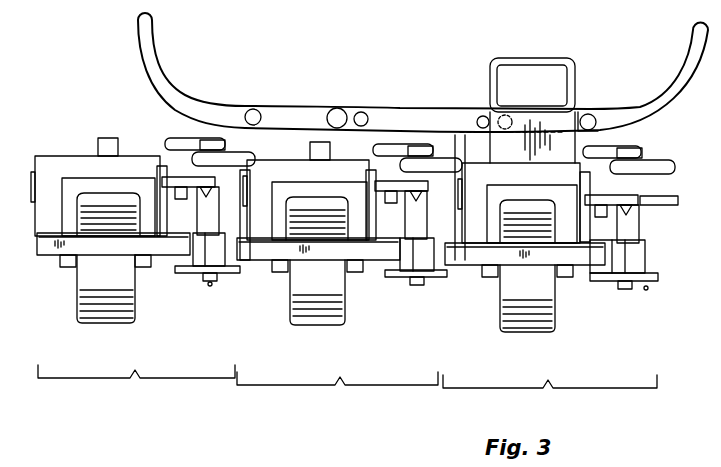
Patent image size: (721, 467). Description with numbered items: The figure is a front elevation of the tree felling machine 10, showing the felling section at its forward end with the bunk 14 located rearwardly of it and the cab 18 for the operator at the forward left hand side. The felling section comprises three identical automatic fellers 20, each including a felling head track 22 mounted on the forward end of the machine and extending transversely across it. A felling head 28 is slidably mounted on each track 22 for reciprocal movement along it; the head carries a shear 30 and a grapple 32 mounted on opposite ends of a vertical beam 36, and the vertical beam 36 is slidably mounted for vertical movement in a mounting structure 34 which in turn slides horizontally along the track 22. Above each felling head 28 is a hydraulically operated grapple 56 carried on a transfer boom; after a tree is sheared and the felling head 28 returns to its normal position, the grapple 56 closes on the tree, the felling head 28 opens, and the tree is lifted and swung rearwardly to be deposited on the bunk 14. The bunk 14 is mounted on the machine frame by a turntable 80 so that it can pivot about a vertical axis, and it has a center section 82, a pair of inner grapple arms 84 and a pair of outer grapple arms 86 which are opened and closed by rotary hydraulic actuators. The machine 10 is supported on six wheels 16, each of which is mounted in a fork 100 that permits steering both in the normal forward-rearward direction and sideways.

The tree felling machine 10 is at (112, 110).
The bunk 14 is at (405, 76).
The wheels 16 is at (86, 302).
The cab 18 is at (531, 60).
The automatic fellers 20 is at (360, 244).
The felling head track 22 is at (50, 253).
The felling head 28 is at (195, 286).
The shear 30 is at (182, 275).
The grapple 32 is at (240, 190).
The mounting structure 34 is at (218, 273).
The vertical beam 36 is at (410, 245).
The hydraulically operated grapple 56 is at (176, 142).
The turntable 80 is at (360, 142).
The center section 82 is at (448, 110).
The inner grapple arms 84 is at (271, 108).
The outer grapple arms 86 is at (158, 37).
The fork 100 is at (70, 180).